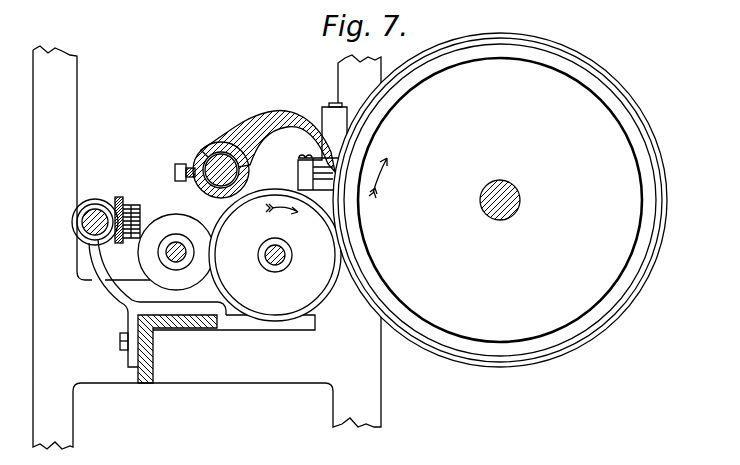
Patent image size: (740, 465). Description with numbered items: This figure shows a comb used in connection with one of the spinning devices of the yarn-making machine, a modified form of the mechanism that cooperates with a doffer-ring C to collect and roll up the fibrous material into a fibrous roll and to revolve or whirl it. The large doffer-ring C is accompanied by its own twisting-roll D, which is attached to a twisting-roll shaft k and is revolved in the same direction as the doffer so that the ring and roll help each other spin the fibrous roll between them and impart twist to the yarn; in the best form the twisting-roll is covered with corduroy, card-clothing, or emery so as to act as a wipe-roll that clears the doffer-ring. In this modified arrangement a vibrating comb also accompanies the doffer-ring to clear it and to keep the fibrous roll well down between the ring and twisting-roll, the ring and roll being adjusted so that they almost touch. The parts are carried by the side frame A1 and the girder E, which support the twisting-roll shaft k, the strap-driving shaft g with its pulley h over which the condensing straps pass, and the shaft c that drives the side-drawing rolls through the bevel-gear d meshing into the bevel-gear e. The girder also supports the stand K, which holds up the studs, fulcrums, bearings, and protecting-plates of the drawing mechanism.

The side frame A1 is at (207, 247).
The doffer-ring C is at (627, 105).
The twisting-roll D is at (275, 255).
The twisting-roll shaft k is at (271, 245).
The stand K is at (310, 324).
The girder E is at (163, 343).
The shaft c is at (96, 213).
The bevel-gear d is at (78, 231).
The bevel-gear e is at (121, 202).
The strap-driving shaft g is at (166, 252).
The pulley h is at (176, 237).